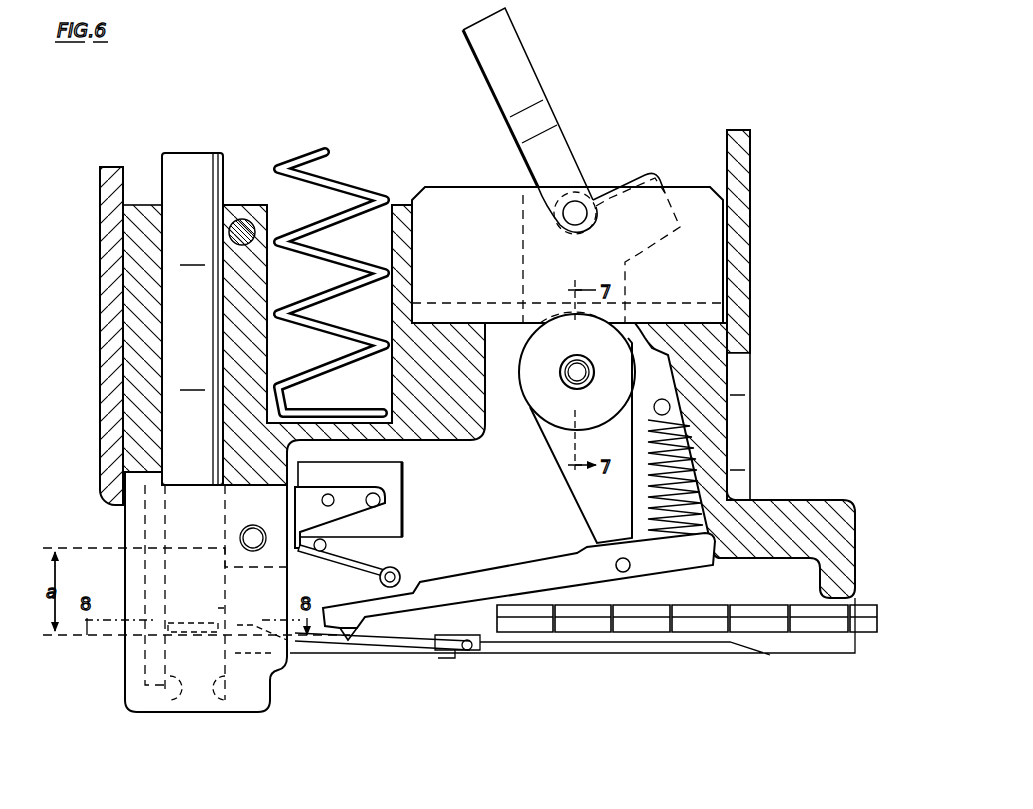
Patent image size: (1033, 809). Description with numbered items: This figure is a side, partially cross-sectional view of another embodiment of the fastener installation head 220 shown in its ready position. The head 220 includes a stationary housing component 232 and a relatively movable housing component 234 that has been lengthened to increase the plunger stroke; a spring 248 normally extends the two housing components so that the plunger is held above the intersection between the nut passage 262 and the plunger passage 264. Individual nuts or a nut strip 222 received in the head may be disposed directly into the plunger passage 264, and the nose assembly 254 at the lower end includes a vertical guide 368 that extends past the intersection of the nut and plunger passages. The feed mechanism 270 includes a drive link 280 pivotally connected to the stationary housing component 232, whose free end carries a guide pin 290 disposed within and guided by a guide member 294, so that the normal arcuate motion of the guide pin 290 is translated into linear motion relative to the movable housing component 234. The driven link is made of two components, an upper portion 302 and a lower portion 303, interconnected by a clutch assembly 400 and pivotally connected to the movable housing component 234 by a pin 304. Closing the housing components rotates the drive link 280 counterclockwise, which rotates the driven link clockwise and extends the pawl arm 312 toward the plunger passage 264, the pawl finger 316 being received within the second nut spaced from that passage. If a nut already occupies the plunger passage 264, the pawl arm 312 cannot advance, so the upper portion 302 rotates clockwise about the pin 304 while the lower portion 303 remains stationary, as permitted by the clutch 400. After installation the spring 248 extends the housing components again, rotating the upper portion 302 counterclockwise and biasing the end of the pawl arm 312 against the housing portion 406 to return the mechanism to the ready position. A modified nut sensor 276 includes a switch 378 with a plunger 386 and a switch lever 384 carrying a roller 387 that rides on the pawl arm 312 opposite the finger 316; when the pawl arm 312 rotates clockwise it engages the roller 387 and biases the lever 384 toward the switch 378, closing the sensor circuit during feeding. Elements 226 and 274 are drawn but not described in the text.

The head 220 is at (88, 283).
The nut strip 222 is at (792, 607).
The plunger rod 226 is at (178, 163).
The stationary housing component 232 is at (100, 365).
The movable housing component 234 is at (470, 418).
The spring 248 is at (323, 157).
The nose assembly 254 is at (134, 684).
The nut passage 262 is at (462, 618).
The plunger passage 264 is at (176, 706).
The feed mechanism 270 is at (607, 55).
The base plate 274 is at (548, 655).
The nut sensor 276 is at (410, 489).
The drive link 280 is at (548, 115).
The guide pin 290 is at (576, 200).
The guide member 294 is at (485, 226).
The upper portion of driven link 302 is at (535, 262).
The lower portion of driven link 303 is at (588, 492).
The pin 304 is at (588, 382).
The pawl arm 312 is at (540, 582).
The pawl finger 316 is at (349, 638).
The vertical guide 368 is at (222, 706).
The switch 378 is at (400, 467).
The switch lever 384 is at (381, 555).
The plunger of sensor switch 386 is at (306, 550).
The roller 387 is at (398, 572).
The clutch assembly 400 is at (556, 408).
The housing portion 406 is at (718, 545).